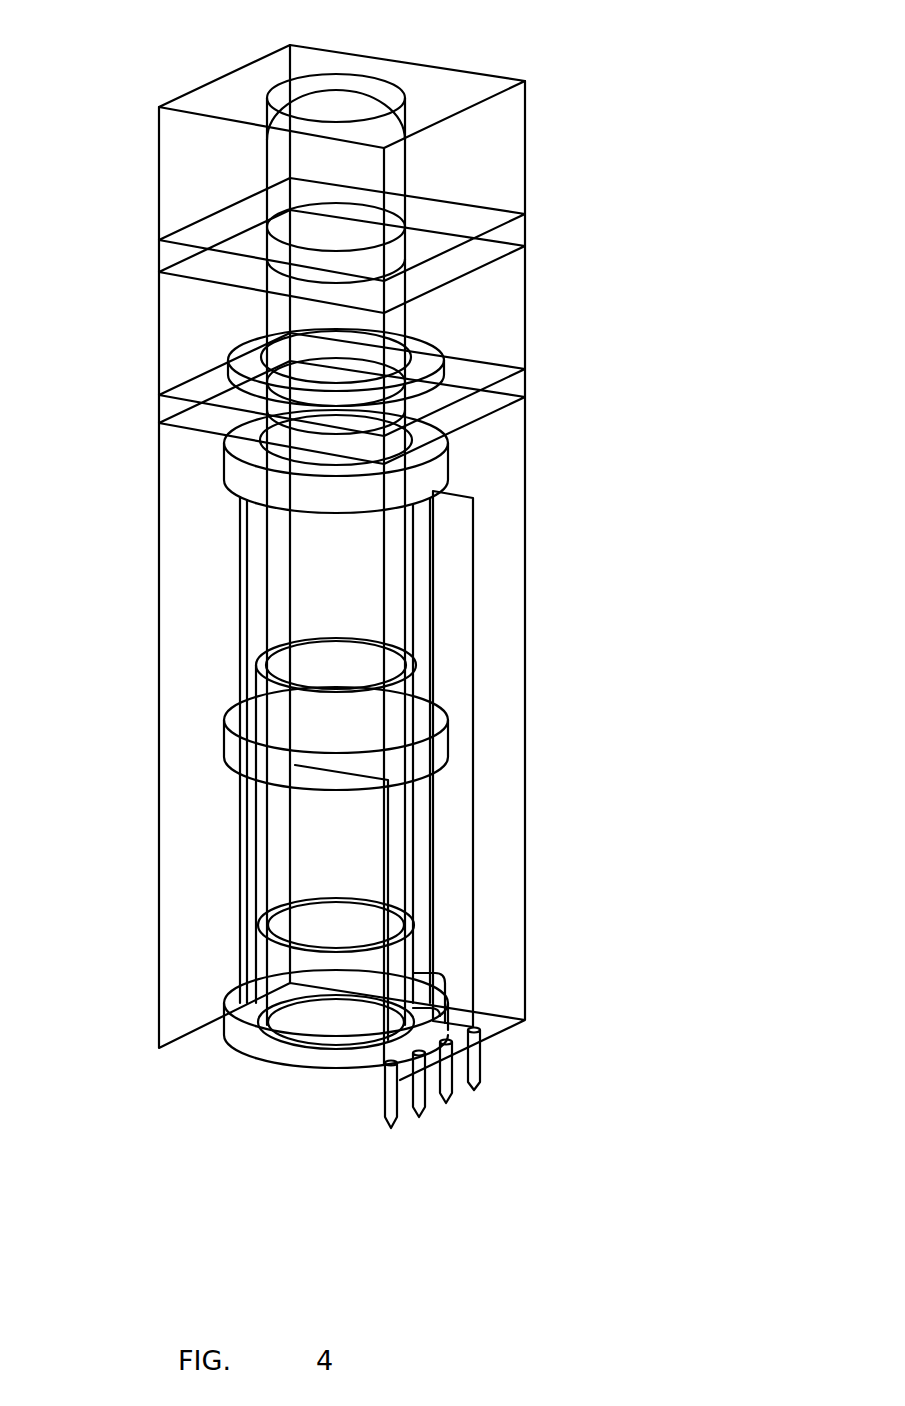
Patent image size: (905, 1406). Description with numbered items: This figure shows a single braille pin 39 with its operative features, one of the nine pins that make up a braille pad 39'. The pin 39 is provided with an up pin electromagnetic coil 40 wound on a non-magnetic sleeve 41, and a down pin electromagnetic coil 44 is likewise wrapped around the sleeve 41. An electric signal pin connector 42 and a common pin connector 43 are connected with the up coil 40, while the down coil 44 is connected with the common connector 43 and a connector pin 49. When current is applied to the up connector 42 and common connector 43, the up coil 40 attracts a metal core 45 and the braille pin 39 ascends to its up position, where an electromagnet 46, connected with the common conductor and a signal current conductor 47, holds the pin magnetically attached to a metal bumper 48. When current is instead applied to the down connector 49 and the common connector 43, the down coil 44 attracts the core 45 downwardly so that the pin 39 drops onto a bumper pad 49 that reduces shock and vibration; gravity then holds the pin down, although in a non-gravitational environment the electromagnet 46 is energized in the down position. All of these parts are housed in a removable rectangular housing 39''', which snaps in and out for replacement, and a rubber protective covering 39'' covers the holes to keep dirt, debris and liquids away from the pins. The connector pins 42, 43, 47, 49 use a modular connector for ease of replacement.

The braille pin 39 is at (309, 560).
The braille pad 39' is at (386, 562).
The covering 39'' is at (343, 83).
The housing 39''' is at (551, 759).
The up pin electromagnetic coil 40 is at (238, 554).
The non-magnetic sleeve 41 is at (220, 740).
The electric signal pin connector 42 is at (482, 1090).
The common pin connector 43 is at (398, 1127).
The down pin electromagnetic coil 44 is at (238, 865).
The metal core 45 is at (419, 928).
The electromagnet 46 is at (442, 372).
The signal current conductor 47 is at (425, 1113).
The metal bumper 48 is at (155, 252).
The connector pin 49 is at (155, 405).